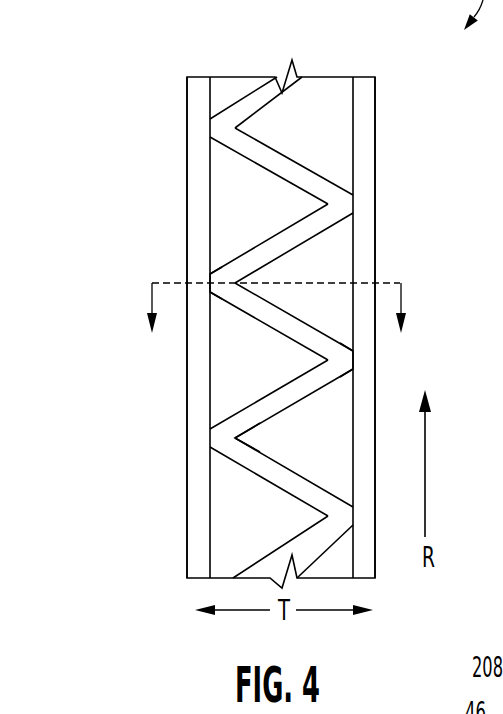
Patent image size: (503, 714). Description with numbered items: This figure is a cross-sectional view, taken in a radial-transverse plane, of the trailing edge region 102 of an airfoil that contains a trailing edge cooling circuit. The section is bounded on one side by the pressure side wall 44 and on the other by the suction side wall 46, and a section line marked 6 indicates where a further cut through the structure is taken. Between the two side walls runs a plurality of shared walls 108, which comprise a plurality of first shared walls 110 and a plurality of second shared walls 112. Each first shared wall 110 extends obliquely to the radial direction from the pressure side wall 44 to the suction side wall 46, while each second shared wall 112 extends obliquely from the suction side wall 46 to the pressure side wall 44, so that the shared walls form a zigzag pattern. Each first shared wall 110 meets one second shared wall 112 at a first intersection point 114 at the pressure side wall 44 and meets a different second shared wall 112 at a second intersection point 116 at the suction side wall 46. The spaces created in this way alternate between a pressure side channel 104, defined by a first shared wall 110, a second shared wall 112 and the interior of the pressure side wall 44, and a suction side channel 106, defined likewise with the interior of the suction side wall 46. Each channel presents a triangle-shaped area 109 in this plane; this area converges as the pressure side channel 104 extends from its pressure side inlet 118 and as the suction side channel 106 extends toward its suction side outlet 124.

The trailing edge region 102 is at (404, 64).
The pressure side wall 44 is at (360, 165).
The suction side wall 46 is at (197, 202).
The pressure side channel 104 is at (332, 147).
The suction side channel 106 is at (265, 221).
The shared walls 108 is at (265, 327).
The triangle-shaped area 109 is at (208, 363).
The first shared walls 110 is at (258, 318).
The second shared walls 112 is at (305, 228).
The first intersection point 114 is at (345, 360).
The second intersection point 116 is at (203, 280).
The pressure side inlet 118 is at (262, 445).
The suction side outlet 124 is at (216, 548).
The section line 6- 6 is at (276, 316).